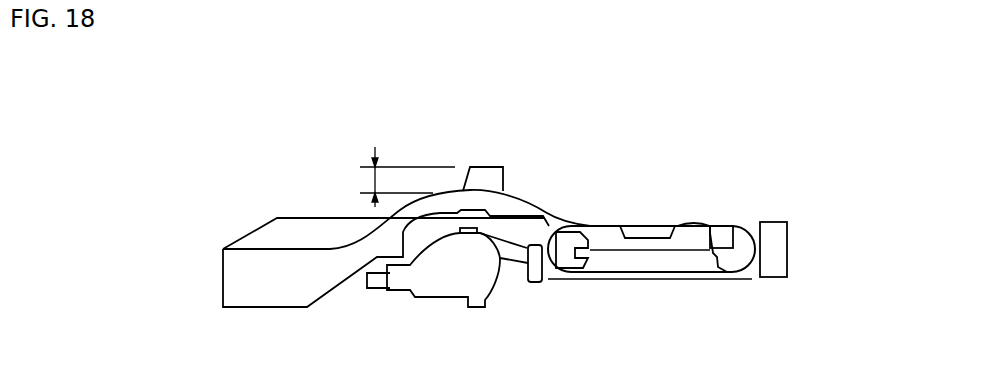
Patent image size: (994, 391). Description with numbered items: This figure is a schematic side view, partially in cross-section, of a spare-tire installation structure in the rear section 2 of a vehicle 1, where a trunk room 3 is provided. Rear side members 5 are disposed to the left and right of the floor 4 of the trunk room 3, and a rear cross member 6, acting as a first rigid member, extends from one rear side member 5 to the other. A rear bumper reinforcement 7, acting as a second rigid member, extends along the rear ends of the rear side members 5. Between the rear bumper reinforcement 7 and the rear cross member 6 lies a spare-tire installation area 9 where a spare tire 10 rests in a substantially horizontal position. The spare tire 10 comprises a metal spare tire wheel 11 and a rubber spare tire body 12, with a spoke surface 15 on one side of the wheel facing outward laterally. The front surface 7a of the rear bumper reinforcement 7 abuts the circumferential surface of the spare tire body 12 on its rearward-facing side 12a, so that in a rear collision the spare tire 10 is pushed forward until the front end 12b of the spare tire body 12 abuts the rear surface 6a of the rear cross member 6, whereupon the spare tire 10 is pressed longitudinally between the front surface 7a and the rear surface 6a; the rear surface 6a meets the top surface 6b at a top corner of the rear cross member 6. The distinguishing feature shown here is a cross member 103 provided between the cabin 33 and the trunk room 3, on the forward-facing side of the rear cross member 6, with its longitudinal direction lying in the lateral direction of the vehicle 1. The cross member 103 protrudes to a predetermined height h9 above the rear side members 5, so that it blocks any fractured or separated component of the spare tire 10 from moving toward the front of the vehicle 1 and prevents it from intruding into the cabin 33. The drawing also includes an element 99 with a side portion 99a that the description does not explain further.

The vehicle 1 is at (195, 205).
The rear section 2 is at (757, 300).
The trunk room 3 is at (651, 188).
The floor 4 is at (293, 215).
The rear side member 5 is at (513, 190).
The rear cross member 6 is at (524, 287).
The rear surface 6a is at (552, 282).
The top surface 6b is at (531, 245).
The rear bumper reinforcement 7 is at (792, 218).
The front surface 7a is at (752, 226).
The spare-tire installation area 9 is at (698, 277).
The spare tire 10 is at (725, 112).
The spare tire wheel 11 is at (697, 222).
The spare tire body 12 is at (743, 223).
The side facing the rear of the vehicle 12a is at (755, 250).
The front end 12b is at (546, 238).
The spoke surface 15 is at (610, 225).
The cabin 33 is at (333, 200).
The mating component 99 is at (455, 308).
The mating component side 99a is at (510, 263).
The cross member 103 is at (480, 167).
The predetermined height h9 is at (390, 171).